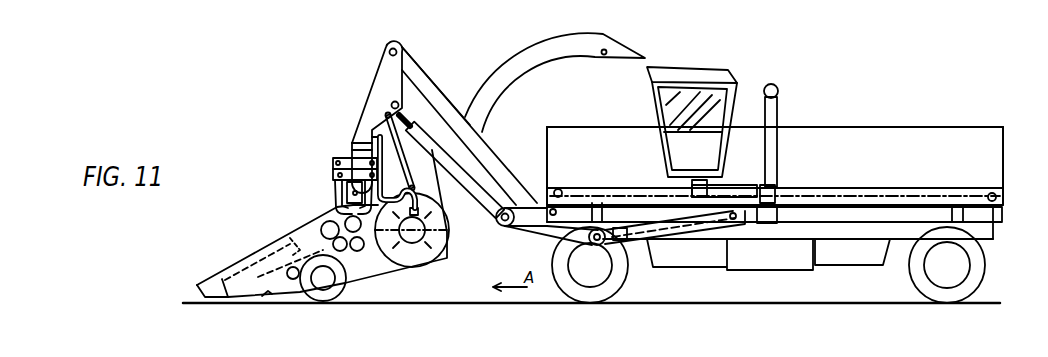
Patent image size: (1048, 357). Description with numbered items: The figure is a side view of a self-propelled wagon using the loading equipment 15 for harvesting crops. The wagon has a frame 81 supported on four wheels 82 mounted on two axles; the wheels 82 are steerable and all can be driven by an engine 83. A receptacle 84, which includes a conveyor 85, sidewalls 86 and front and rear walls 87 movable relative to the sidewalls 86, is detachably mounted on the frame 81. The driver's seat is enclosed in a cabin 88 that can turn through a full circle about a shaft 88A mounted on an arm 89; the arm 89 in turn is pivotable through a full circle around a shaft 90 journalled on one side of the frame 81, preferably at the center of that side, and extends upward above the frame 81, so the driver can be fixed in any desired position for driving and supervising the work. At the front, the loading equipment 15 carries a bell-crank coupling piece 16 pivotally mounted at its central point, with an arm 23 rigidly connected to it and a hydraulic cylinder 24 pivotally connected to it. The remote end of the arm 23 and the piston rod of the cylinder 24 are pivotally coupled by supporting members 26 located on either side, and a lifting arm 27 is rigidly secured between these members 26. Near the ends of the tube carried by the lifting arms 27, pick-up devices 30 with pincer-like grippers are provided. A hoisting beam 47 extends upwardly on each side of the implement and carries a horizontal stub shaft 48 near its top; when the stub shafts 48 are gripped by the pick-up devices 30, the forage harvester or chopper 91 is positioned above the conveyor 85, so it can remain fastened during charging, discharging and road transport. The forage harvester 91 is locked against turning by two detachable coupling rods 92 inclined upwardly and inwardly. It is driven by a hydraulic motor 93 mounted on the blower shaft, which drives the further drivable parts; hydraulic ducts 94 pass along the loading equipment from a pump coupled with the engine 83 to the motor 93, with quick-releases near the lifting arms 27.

The loading equipment 15 is at (423, 70).
The coupling piece 16 is at (533, 228).
The arm 23 is at (433, 92).
The hydraulic cylinder 24 is at (480, 200).
The supporting members 26 is at (378, 70).
The lifting arm 27 is at (352, 148).
The pick-up device 30 is at (337, 182).
The hoisting beam 47 is at (782, 103).
The stub shaft 48 is at (778, 84).
The frame 81 is at (882, 203).
The wheels 82 is at (620, 285).
The engine 83 is at (752, 272).
The receptacle 84 is at (902, 128).
The conveyor 85 is at (847, 163).
The sidewalls 86 is at (848, 133).
The front and rear walls 87 is at (545, 142).
The cabin 88 is at (653, 93).
The shaft 88A is at (688, 181).
The arm 89 is at (752, 185).
The shaft 90 is at (778, 200).
The forage harvester 91 is at (264, 248).
The coupling rods 92 is at (413, 186).
The hydraulic motor 93 is at (422, 260).
The hydraulic ducts 94 is at (357, 147).